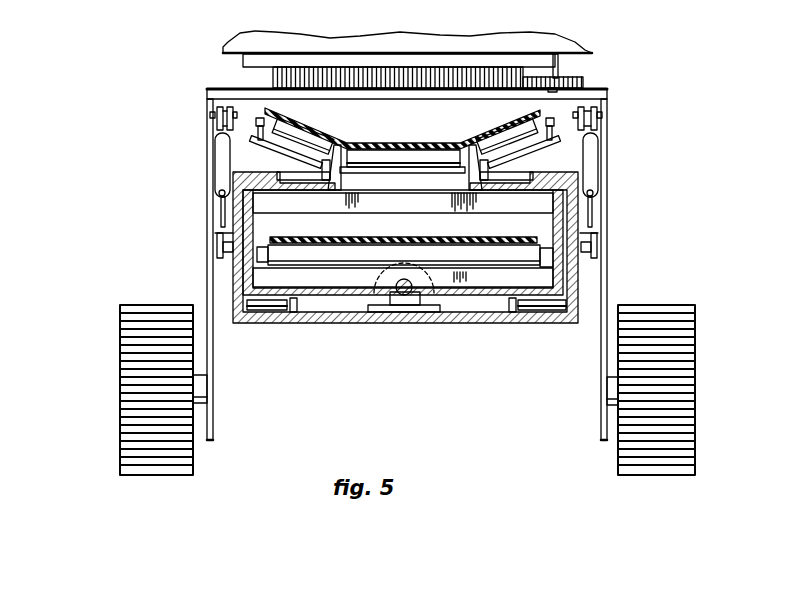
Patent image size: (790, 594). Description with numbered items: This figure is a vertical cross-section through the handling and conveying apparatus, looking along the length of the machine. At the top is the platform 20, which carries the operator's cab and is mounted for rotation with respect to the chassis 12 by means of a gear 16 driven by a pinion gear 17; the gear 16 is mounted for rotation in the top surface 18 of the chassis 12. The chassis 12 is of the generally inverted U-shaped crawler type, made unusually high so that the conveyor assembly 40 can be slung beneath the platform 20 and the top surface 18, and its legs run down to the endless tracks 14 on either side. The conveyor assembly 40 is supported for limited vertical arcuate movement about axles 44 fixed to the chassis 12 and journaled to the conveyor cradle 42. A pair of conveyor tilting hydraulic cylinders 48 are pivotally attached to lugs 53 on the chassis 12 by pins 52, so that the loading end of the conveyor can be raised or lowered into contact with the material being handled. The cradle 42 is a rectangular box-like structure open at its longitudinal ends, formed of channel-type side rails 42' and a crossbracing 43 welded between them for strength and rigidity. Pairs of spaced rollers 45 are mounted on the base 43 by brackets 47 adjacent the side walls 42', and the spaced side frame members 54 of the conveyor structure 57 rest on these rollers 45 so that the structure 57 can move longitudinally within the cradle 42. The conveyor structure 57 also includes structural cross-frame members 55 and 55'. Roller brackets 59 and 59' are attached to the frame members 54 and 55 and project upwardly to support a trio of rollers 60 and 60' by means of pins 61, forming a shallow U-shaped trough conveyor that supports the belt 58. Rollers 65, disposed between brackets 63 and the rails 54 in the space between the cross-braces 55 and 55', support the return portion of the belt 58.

The chassis 12 is at (205, 284).
The endless track 14 is at (137, 305).
The gear 16 is at (338, 80).
The pinion gear 17 is at (570, 78).
The top surface 18 is at (262, 53).
The platform 20 is at (457, 43).
The conveyor assembly 40 is at (432, 136).
The conveyor cradle 42 is at (628, 213).
The side rails 42' is at (192, 212).
The crossbracing 43 is at (420, 317).
The axles 44 is at (215, 262).
The rollers 45 is at (262, 303).
The brackets 47 is at (303, 308).
The conveyor tilting hydraulic cylinders 48 is at (235, 178).
The pins 52 is at (212, 115).
The lugs 53 is at (213, 108).
The side frame members 54 is at (288, 180).
The cross-frame member 55 is at (403, 242).
The cross-frame member 55' is at (356, 325).
The conveyor structure 57 is at (522, 166).
The belt 58 is at (320, 238).
The roller bracket 59 is at (409, 154).
The roller bracket 59' is at (405, 170).
The rollers 60 is at (420, 106).
The roller 60' is at (403, 140).
The pins 61 is at (257, 123).
The brackets 63 is at (550, 228).
The rollers 65 is at (375, 253).